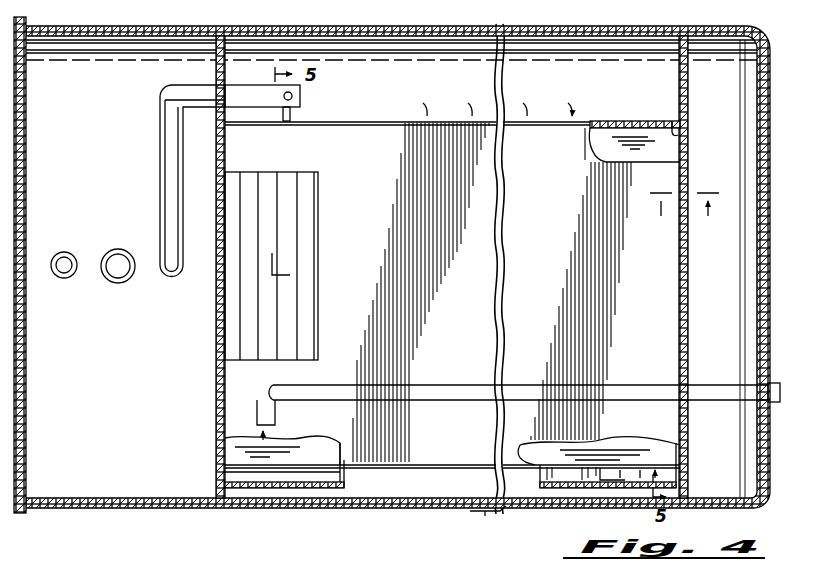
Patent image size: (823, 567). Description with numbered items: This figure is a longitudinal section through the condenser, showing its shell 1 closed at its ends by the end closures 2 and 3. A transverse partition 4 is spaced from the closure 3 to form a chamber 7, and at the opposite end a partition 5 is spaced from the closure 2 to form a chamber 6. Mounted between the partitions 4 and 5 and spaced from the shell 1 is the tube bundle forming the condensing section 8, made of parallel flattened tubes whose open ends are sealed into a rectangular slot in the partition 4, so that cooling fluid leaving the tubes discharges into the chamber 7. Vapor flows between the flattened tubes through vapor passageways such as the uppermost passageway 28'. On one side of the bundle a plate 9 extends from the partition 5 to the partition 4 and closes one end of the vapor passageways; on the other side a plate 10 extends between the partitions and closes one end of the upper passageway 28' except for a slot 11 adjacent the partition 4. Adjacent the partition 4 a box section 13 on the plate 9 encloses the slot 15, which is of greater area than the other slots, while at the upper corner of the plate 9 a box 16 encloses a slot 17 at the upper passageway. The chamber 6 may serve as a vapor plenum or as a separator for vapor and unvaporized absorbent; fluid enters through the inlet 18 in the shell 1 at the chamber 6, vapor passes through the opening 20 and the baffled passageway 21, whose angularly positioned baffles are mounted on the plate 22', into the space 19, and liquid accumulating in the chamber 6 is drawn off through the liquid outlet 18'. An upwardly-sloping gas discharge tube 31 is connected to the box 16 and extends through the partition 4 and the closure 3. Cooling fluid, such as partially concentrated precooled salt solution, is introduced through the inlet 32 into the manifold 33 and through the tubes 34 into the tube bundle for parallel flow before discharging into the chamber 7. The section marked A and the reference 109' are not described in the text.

The shell 1 is at (286, 27).
The end closure 2 is at (29, 184).
The end closure 3 is at (769, 306).
The transverse partition 4 is at (688, 338).
The partition 5 is at (215, 385).
The chamber 6 is at (110, 381).
The chamber 7 is at (691, 247).
The condensing section 8 is at (368, 196).
The plate 9 is at (430, 469).
The plate 10 is at (618, 122).
The slot 11 is at (670, 122).
The box section 13 is at (535, 470).
The slot 15 is at (555, 458).
The box 16 is at (342, 477).
The slot 17 is at (312, 478).
The fluid inlet 18 is at (118, 245).
The liquid outlet 18' is at (62, 243).
The vapor space 19 is at (444, 90).
The opening 20 is at (216, 330).
The baffled passageway 21 is at (320, 230).
The plate 22' is at (316, 265).
The vapor passageway 28' is at (631, 459).
The gas discharge tube 31 is at (458, 383).
The cooling fluid inlet 32 is at (160, 188).
The manifold 33 is at (293, 95).
The tubes 34 is at (291, 116).
The section A is at (569, 86).
The sheet reference 109' is at (188, 551).